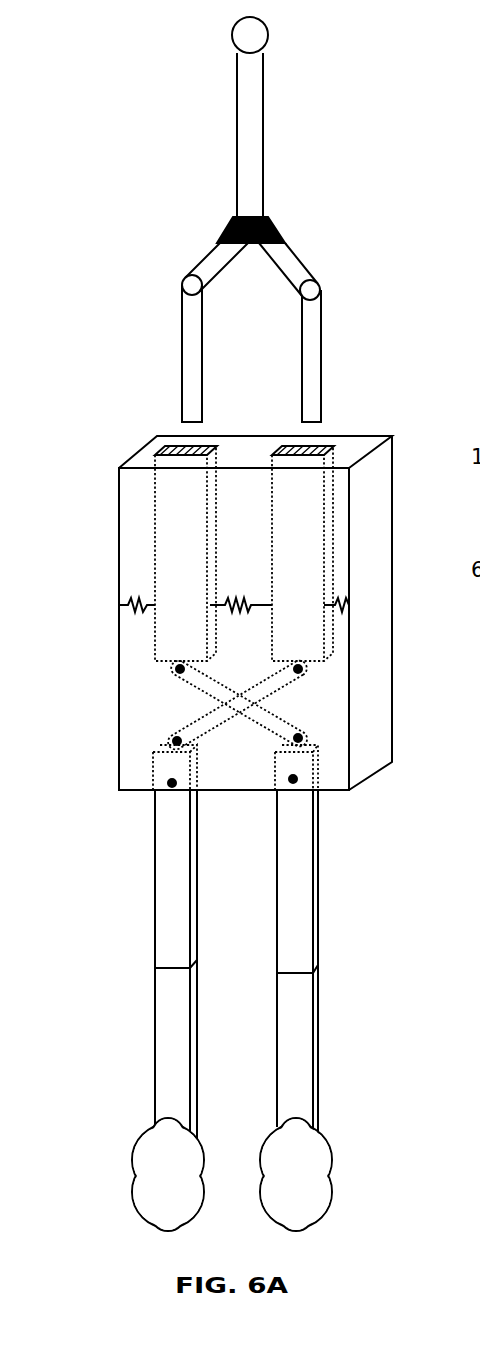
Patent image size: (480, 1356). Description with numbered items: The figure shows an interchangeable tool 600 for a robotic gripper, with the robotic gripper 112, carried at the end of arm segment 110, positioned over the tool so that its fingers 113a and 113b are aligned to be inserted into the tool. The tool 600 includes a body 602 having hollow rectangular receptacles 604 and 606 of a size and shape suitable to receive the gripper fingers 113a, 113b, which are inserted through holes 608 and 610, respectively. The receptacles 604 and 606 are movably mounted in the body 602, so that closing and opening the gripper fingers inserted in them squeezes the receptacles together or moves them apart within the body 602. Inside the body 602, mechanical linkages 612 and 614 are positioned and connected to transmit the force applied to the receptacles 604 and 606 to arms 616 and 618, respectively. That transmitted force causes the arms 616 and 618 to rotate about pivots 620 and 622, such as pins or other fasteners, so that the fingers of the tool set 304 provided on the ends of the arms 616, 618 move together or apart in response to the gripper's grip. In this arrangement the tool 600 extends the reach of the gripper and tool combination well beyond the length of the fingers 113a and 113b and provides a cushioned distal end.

The arm segment 110 is at (266, 125).
The gripper 112 is at (298, 262).
The finger 113a is at (182, 352).
The finger 113b is at (322, 352).
The tool 600 is at (251, 608).
The body 602 is at (119, 527).
The receptacle 604 is at (155, 555).
The receptacle 606 is at (328, 537).
The hole 608 is at (166, 448).
The hole 610 is at (288, 447).
The mechanical linkage 612 is at (196, 722).
The mechanical linkage 614 is at (272, 718).
The arm 616 is at (155, 900).
The arm 618 is at (318, 882).
The pivot 620 is at (172, 783).
The pivot 622 is at (293, 779).
The tool set 304 is at (353, 963).